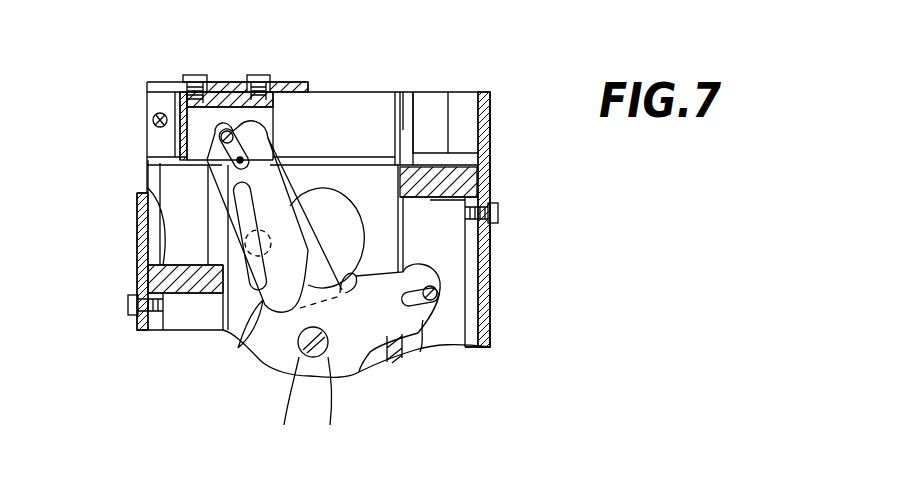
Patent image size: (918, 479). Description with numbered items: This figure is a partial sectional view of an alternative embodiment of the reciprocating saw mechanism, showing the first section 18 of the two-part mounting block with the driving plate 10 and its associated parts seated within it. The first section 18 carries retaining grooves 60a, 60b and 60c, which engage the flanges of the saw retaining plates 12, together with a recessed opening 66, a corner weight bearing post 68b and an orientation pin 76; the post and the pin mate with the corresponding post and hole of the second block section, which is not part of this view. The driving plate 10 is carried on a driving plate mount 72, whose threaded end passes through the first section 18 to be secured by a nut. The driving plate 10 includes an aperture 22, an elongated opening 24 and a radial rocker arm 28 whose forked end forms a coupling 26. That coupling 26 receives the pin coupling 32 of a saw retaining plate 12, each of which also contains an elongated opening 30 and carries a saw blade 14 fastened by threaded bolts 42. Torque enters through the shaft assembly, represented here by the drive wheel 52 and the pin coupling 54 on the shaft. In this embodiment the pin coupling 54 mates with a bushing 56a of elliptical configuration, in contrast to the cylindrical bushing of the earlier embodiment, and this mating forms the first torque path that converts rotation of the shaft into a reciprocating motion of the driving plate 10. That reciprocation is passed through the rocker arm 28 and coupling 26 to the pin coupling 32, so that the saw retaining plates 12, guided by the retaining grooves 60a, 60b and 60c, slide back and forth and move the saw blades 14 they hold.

The driving plate 10 is at (352, 364).
The saw retaining plate 12 is at (148, 172).
The saw blade 14 is at (283, 82).
The first section 18 is at (452, 347).
The aperture 22 is at (329, 405).
The elongated opening 24 is at (272, 197).
The coupling 26 is at (285, 178).
The radial rocker arm 28 is at (293, 412).
The elongated opening 30 is at (260, 119).
The pin coupling 32 is at (243, 159).
The threaded bolt 42 is at (247, 76).
The drive wheel 52 is at (357, 248).
The pin coupling 54 is at (233, 216).
The bushing 56a is at (242, 350).
The retaining groove 60a is at (400, 92).
The retaining groove 60b is at (197, 330).
The retaining groove 60c is at (467, 164).
The recessed opening 66 is at (348, 294).
The corner weight bearing post 68b is at (158, 98).
The driving plate mount 72 is at (296, 378).
The orientation pin 76 is at (153, 120).